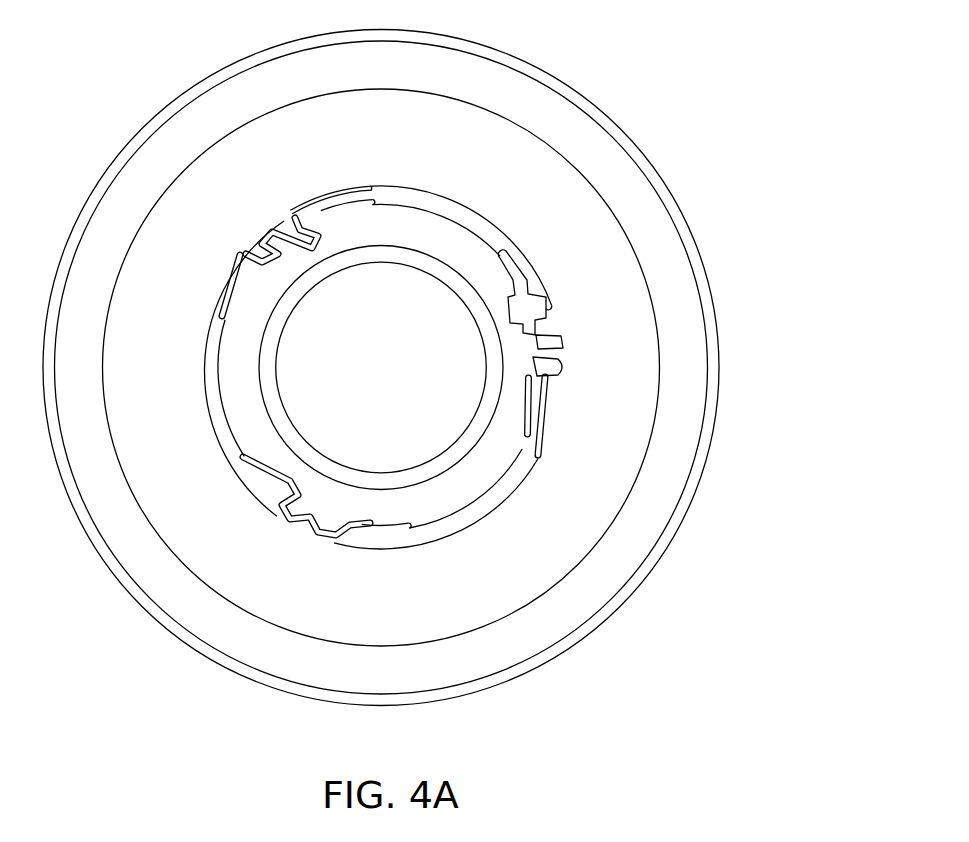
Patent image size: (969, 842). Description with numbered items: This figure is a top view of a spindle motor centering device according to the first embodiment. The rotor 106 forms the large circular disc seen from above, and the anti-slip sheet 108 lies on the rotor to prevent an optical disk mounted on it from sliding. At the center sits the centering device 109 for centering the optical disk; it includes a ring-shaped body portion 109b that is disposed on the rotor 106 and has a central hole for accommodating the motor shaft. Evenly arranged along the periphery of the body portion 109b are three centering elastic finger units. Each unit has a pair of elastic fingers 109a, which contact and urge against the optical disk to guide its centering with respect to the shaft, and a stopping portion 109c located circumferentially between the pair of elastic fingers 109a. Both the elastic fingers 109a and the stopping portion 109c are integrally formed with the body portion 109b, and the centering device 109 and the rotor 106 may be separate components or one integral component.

The rotor 106 is at (692, 500).
The anti-slip sheet 108 is at (630, 553).
The centering device 109 is at (514, 285).
The elastic fingers 109a is at (551, 307).
The body portion 109b is at (486, 212).
The stopping portion 109c is at (565, 340).